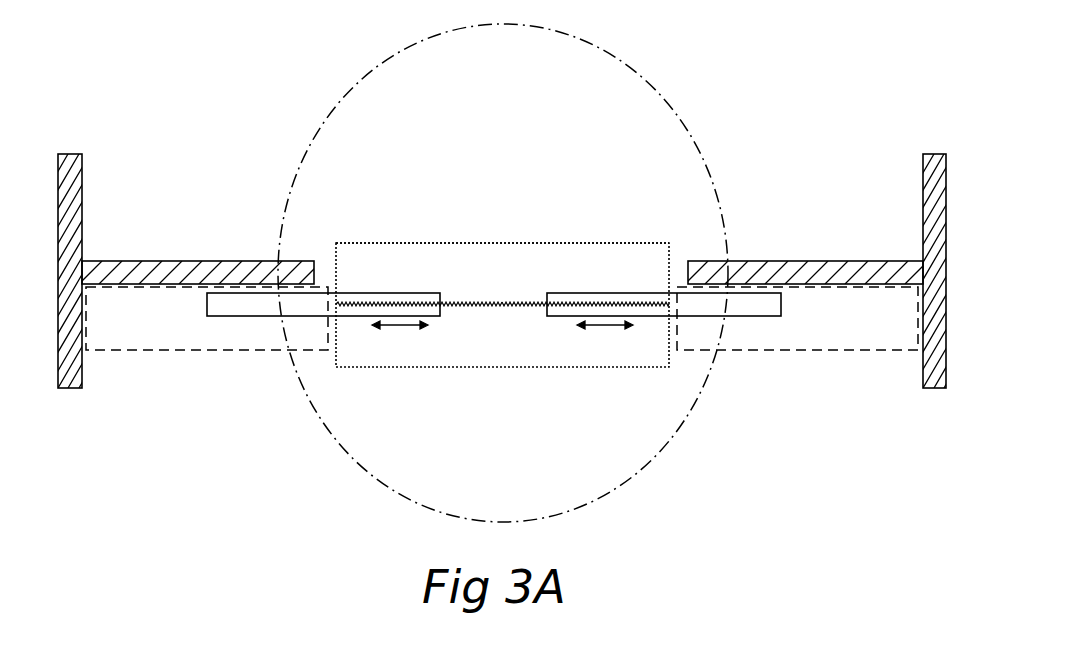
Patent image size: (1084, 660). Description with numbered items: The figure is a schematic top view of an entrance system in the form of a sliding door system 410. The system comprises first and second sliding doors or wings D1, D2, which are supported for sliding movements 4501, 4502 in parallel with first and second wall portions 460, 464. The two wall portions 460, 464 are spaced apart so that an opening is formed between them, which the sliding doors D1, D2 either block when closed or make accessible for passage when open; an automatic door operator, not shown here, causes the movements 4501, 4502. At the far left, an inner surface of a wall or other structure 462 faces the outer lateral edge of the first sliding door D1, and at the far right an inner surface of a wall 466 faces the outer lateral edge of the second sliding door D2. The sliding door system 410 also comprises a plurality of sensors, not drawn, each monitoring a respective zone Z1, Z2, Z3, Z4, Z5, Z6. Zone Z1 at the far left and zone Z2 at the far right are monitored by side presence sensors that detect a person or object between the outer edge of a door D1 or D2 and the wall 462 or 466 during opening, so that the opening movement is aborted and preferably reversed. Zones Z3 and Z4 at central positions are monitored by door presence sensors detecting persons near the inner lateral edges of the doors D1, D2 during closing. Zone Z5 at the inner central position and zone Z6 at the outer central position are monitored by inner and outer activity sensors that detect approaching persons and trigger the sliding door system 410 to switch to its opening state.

The sliding door system 410 is at (188, 64).
The first wall portion 460 is at (167, 268).
The wall 462 is at (72, 246).
The second wall portion 464 is at (803, 268).
The wall 466 is at (938, 244).
The sliding movement 4501 is at (397, 330).
The sliding movement 4502 is at (609, 330).
The first sliding door D1 is at (255, 317).
The second sliding door D2 is at (757, 317).
The zone Z1 is at (207, 318).
The zone Z2 is at (797, 318).
The zone Z3 is at (502, 305).
The zone Z4 is at (502, 265).
The zone Z5 is at (499, 445).
The zone Z6 is at (499, 138).